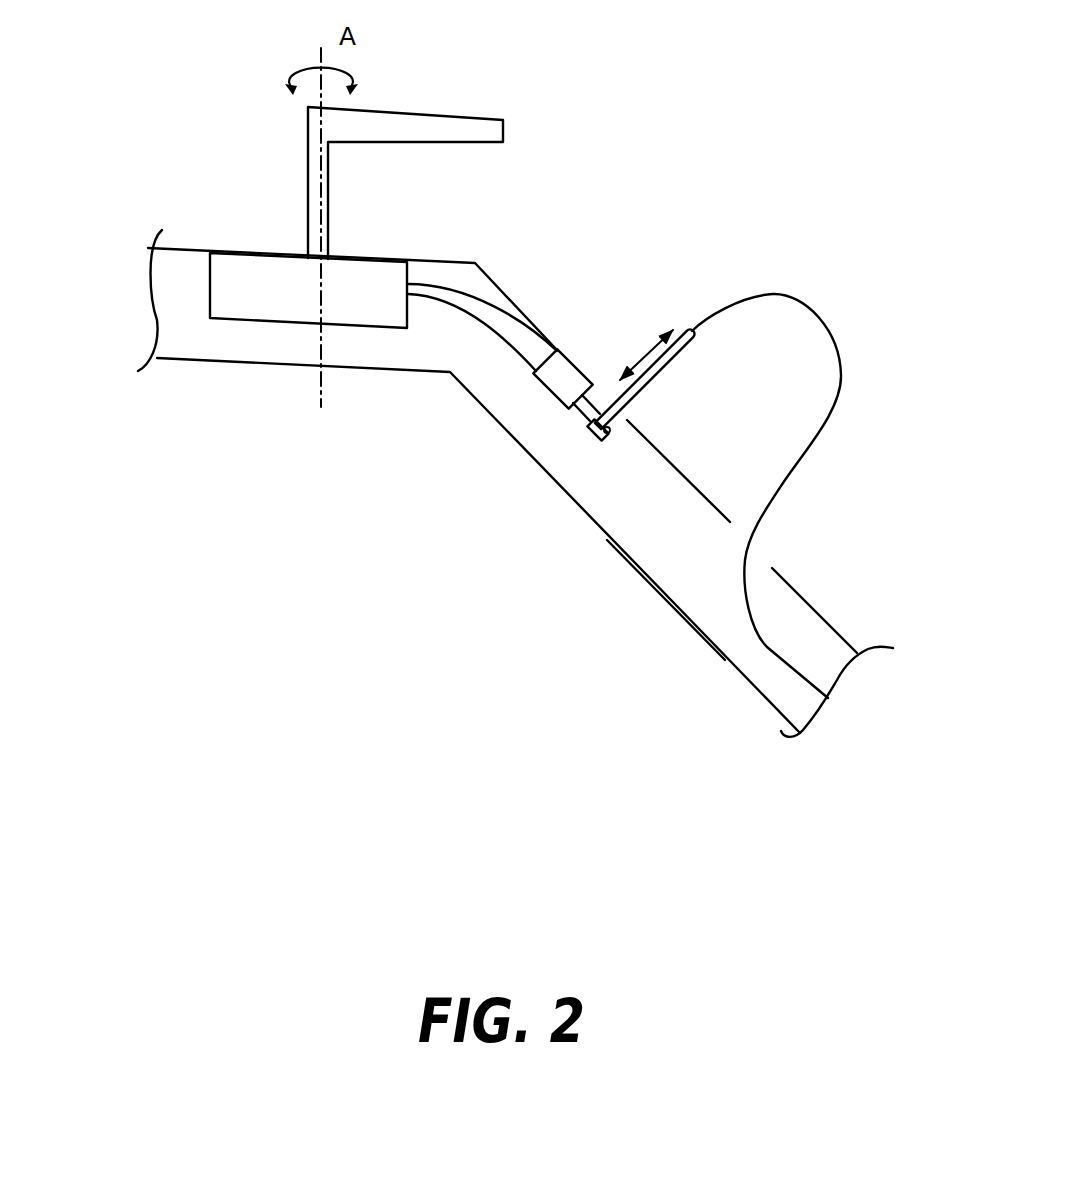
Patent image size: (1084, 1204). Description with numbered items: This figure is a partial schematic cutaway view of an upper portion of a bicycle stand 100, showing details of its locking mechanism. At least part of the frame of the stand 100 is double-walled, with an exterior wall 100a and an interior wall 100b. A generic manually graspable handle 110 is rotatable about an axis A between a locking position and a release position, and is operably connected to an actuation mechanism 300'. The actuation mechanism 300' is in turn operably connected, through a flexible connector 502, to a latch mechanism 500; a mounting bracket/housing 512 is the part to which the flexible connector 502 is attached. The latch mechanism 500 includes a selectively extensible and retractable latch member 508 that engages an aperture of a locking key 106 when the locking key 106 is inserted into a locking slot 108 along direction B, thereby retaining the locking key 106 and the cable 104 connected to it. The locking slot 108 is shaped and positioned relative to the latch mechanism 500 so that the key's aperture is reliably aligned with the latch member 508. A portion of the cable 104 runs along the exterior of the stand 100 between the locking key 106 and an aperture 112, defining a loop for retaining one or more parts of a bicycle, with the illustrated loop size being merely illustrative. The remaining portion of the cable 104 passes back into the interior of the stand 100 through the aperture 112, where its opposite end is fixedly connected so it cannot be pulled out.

The stand 100 is at (229, 478).
The exterior wall 100a is at (830, 627).
The interior wall 100b is at (725, 660).
The cable 104 is at (807, 457).
The locking key 106 is at (691, 338).
The locking slot 108 is at (597, 378).
The handle 110 is at (403, 120).
The aperture 112 is at (765, 549).
The actuation mechanism 300' is at (284, 253).
The latch mechanism 500 is at (562, 378).
The flexible connector 502 is at (458, 300).
The latch member 508 is at (607, 435).
The mounting bracket/housing 512 is at (548, 388).